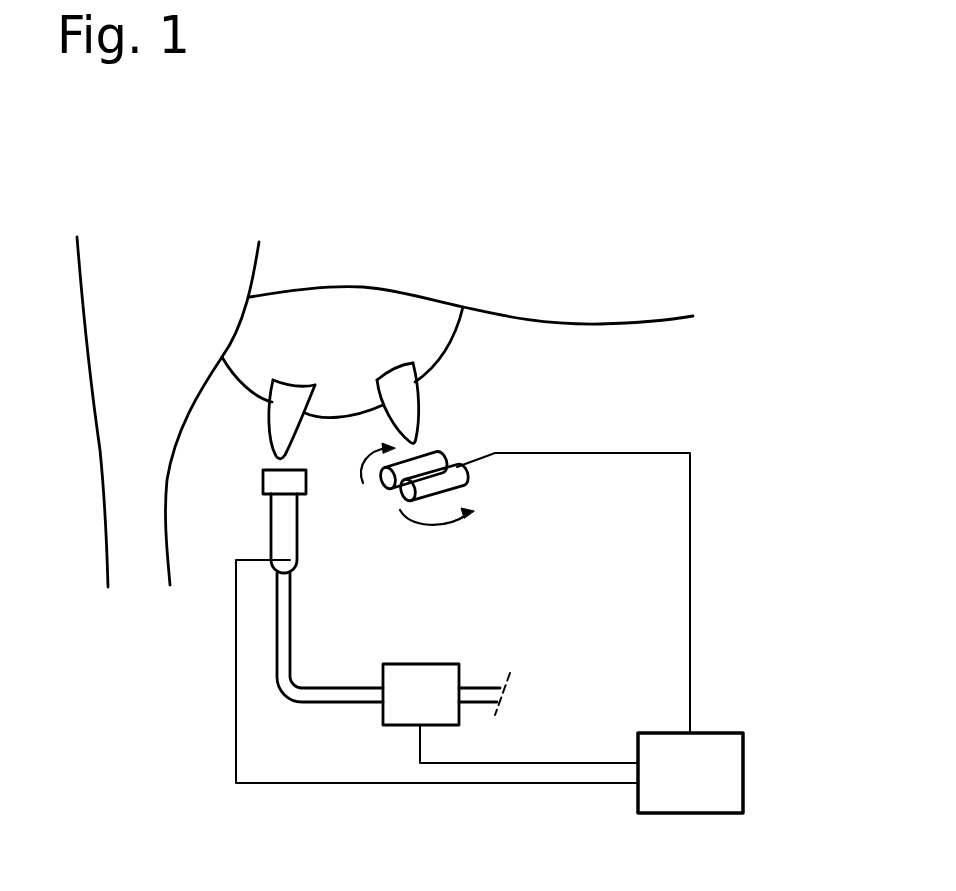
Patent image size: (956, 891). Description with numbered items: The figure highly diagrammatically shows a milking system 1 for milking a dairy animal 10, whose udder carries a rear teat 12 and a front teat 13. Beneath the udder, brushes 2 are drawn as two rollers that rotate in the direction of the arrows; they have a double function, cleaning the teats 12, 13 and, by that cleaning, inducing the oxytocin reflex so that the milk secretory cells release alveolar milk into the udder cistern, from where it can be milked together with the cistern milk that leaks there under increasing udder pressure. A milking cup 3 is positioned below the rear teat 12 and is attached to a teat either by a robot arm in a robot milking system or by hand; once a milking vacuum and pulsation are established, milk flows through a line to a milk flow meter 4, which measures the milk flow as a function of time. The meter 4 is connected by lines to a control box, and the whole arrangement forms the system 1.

The milking system 1 is at (726, 476).
The brushes 2 is at (403, 492).
The milking cup 3 is at (284, 519).
The milk flow meter 4 is at (397, 711).
The dairy animal 10 is at (457, 238).
The rear teat 12 is at (284, 426).
The front teat 13 is at (405, 408).